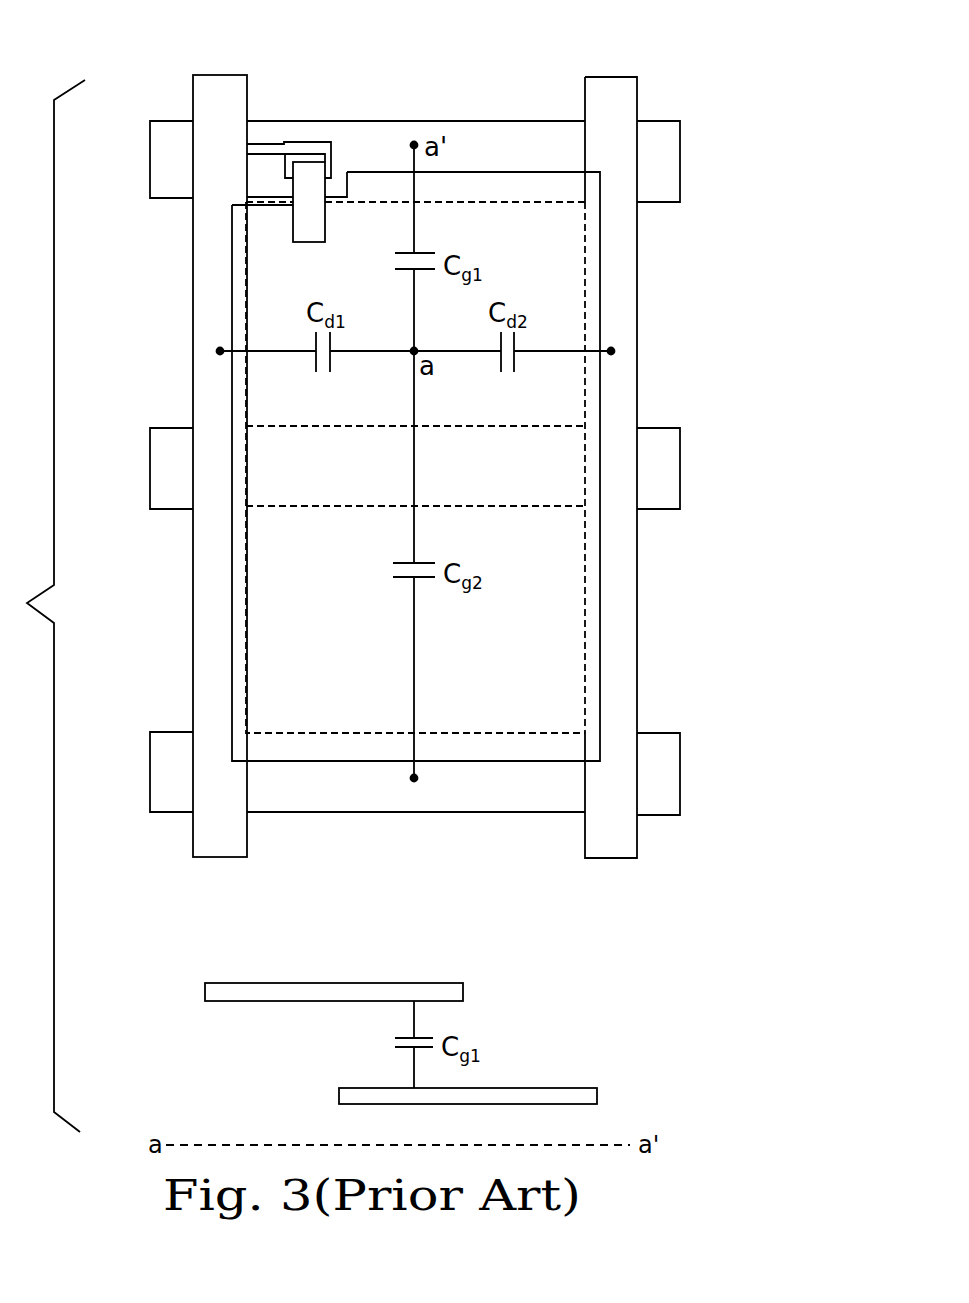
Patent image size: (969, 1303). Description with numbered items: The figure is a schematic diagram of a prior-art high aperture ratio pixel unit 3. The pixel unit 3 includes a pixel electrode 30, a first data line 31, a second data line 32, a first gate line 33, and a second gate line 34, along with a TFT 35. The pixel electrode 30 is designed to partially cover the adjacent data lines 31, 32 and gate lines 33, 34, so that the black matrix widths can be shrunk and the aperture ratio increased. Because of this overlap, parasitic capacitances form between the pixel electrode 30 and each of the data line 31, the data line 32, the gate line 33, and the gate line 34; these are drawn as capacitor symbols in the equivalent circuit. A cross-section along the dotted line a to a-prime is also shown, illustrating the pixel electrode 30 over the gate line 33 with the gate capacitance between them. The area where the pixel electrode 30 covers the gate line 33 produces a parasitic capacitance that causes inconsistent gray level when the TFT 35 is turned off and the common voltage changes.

The HAR pixel unit 3 is at (100, 638).
The pixel electrode 30 is at (282, 610).
The first data line 31 is at (222, 93).
The second data line 32 is at (610, 98).
The first gate line 33 is at (173, 163).
The second gate line 34 is at (300, 785).
The TFT 35 is at (318, 92).